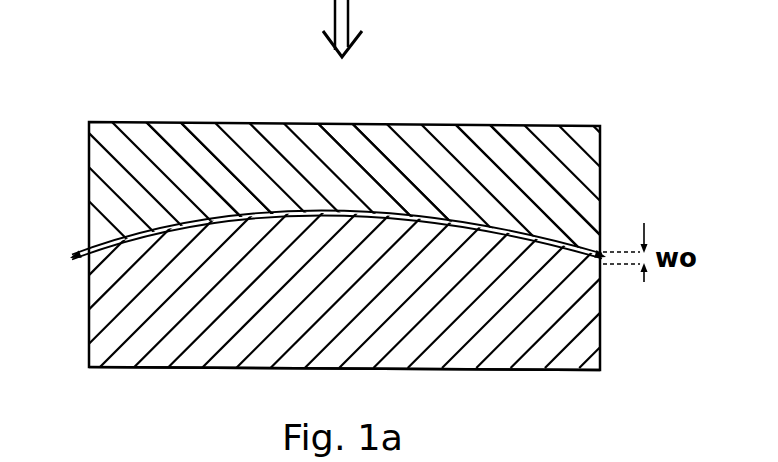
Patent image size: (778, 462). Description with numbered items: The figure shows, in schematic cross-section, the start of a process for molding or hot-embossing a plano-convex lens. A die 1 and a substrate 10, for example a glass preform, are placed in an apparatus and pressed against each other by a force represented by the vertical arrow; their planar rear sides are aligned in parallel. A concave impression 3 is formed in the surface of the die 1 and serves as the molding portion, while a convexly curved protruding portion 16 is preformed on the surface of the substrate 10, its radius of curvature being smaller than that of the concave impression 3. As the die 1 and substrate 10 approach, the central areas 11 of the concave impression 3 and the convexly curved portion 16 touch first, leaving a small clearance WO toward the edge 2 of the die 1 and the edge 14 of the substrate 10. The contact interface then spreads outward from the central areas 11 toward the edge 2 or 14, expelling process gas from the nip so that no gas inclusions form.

The die 1 is at (590, 149).
The edge of the die 2 is at (127, 242).
The concave impression 3 is at (472, 220).
The substrate 10 is at (592, 362).
The central areas 11 is at (342, 212).
The edge of the substrate 14 is at (128, 244).
The convexly curved protruding portion 16 is at (168, 222).